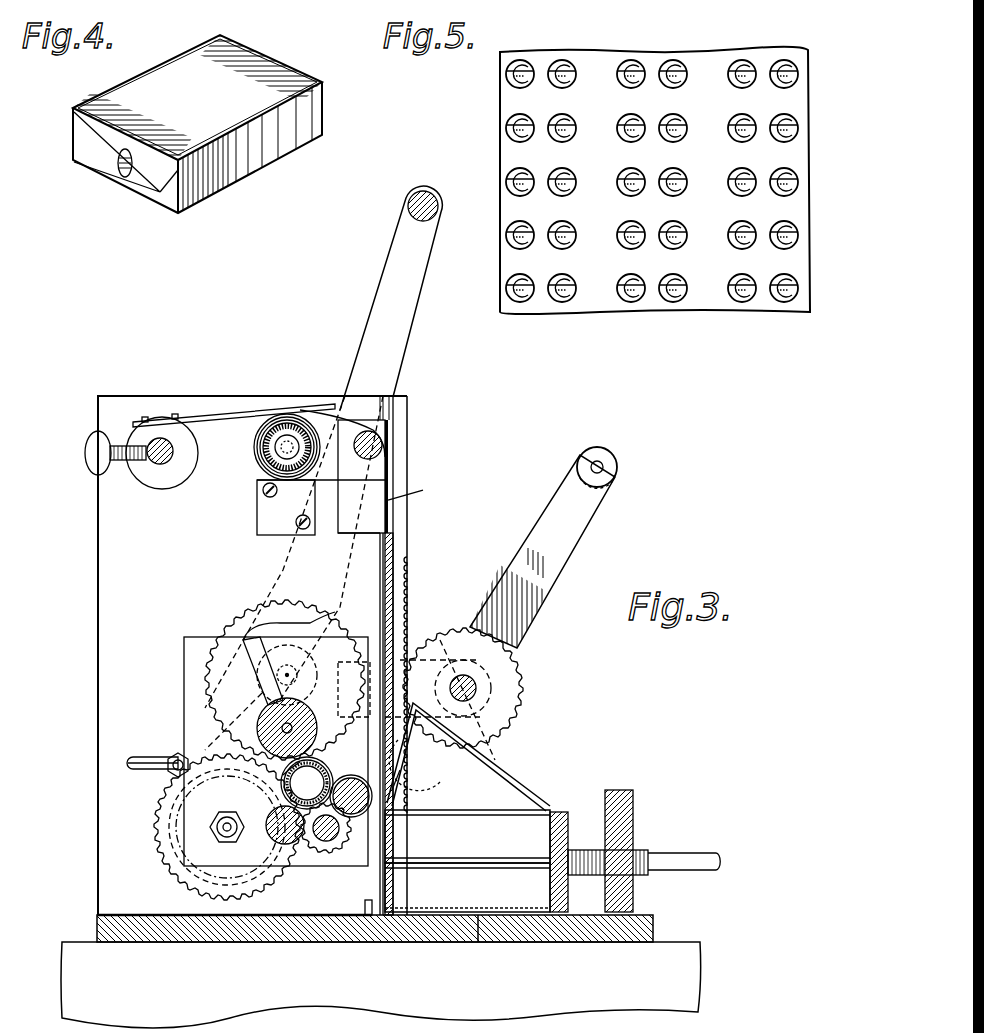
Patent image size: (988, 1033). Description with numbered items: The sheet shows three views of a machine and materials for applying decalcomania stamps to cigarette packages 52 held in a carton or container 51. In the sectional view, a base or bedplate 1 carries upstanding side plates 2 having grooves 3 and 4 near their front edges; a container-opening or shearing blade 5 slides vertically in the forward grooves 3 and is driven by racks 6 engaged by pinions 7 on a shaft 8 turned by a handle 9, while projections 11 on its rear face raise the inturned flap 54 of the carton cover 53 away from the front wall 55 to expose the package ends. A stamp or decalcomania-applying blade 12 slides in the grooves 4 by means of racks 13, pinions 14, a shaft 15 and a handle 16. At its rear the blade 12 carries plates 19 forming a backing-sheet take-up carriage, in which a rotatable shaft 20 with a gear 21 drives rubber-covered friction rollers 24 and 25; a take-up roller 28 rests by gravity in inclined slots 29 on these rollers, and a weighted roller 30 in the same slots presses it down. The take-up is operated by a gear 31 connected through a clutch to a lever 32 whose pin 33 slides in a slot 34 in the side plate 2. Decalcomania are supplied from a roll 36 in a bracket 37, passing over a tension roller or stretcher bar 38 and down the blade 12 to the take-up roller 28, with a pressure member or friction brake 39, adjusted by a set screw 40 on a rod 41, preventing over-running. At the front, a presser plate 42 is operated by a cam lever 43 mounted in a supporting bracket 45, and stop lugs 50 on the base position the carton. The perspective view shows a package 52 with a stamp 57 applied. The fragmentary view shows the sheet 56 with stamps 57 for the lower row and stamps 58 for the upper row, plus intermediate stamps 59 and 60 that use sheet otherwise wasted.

In FIG. 3, the base or bedplate 1 is at (653, 920).
In FIG. 3, the side plates 2 is at (98, 612).
In FIG. 3, the grooves 3 is at (407, 405).
In FIG. 3, the grooves 4 is at (389, 412).
In FIG. 3, the container-opening or shearing blade 5 is at (392, 542).
In FIG. 3, the racks 6 is at (403, 600).
In FIG. 3, the pinions 7 is at (488, 696).
In FIG. 3, the shaft 8 is at (478, 691).
In FIG. 3, the handle 9 is at (50, 557).
In FIG. 3, the projections 11 is at (398, 780).
In FIG. 3, the stamp or decalcomania-applying blade 12 is at (393, 650).
In FIG. 3, the racks 13 is at (452, 790).
In FIG. 3, the pinions 14 is at (380, 615).
In FIG. 3, the shaft 15 is at (292, 640).
In FIG. 3, the handle 16 is at (378, 292).
In FIG. 3, the plates 19 is at (184, 655).
In FIG. 3, the rotatable shaft 20 is at (320, 845).
In FIG. 3, the gear 21 is at (326, 842).
In FIG. 3, the friction roller 24 is at (319, 779).
In FIG. 3, the friction roller 25 is at (227, 818).
In FIG. 3, the take-up roller 28 is at (300, 762).
In FIG. 3, the inclined slots 29 is at (243, 640).
In FIG. 3, the weighted roller 30 is at (265, 722).
In FIG. 3, the gear 31 is at (202, 878).
In FIG. 3, the lever 32 is at (188, 792).
In FIG. 3, the pin 33 is at (178, 752).
In FIG. 3, the slot 34 is at (150, 770).
In FIG. 3, the roll 36 is at (273, 448).
In FIG. 3, the bracket 37 is at (362, 490).
In FIG. 3, the tension roller or stretcher bar 38 is at (382, 440).
In FIG. 3, the pressure member or friction brake 39 is at (300, 405).
In FIG. 3, the set screw 40 is at (88, 440).
In FIG. 3, the rod 41 is at (160, 462).
In FIG. 3, the presser plate 42 is at (560, 812).
In FIG. 3, the cam lever 43 is at (648, 852).
In FIG. 3, the supporting bracket 45 is at (633, 800).
In FIG. 3, the stop lugs 50 is at (365, 915).
In FIG. 3, the carton or container 51 is at (478, 915).
In FIG. 4, the cigarette packages 52 is at (232, 165).
In FIG. 3, the cigarette packages 52 is at (467, 861).
In FIG. 3, the cover 53 is at (500, 785).
In FIG. 3, the inturned flap 54 is at (408, 752).
In FIG. 3, the front wall 55 is at (355, 895).
In FIG. 5, the sheet 56 is at (615, 318).
In FIG. 3, the sheet 56 is at (424, 486).
In FIG. 4, the stamps 57 is at (122, 178).
In FIG. 5, the stamps 57 is at (520, 302).
In FIG. 5, the stamps 58 is at (520, 249).
In FIG. 5, the stamps 59 is at (562, 302).
In FIG. 5, the stamps 60 is at (562, 249).